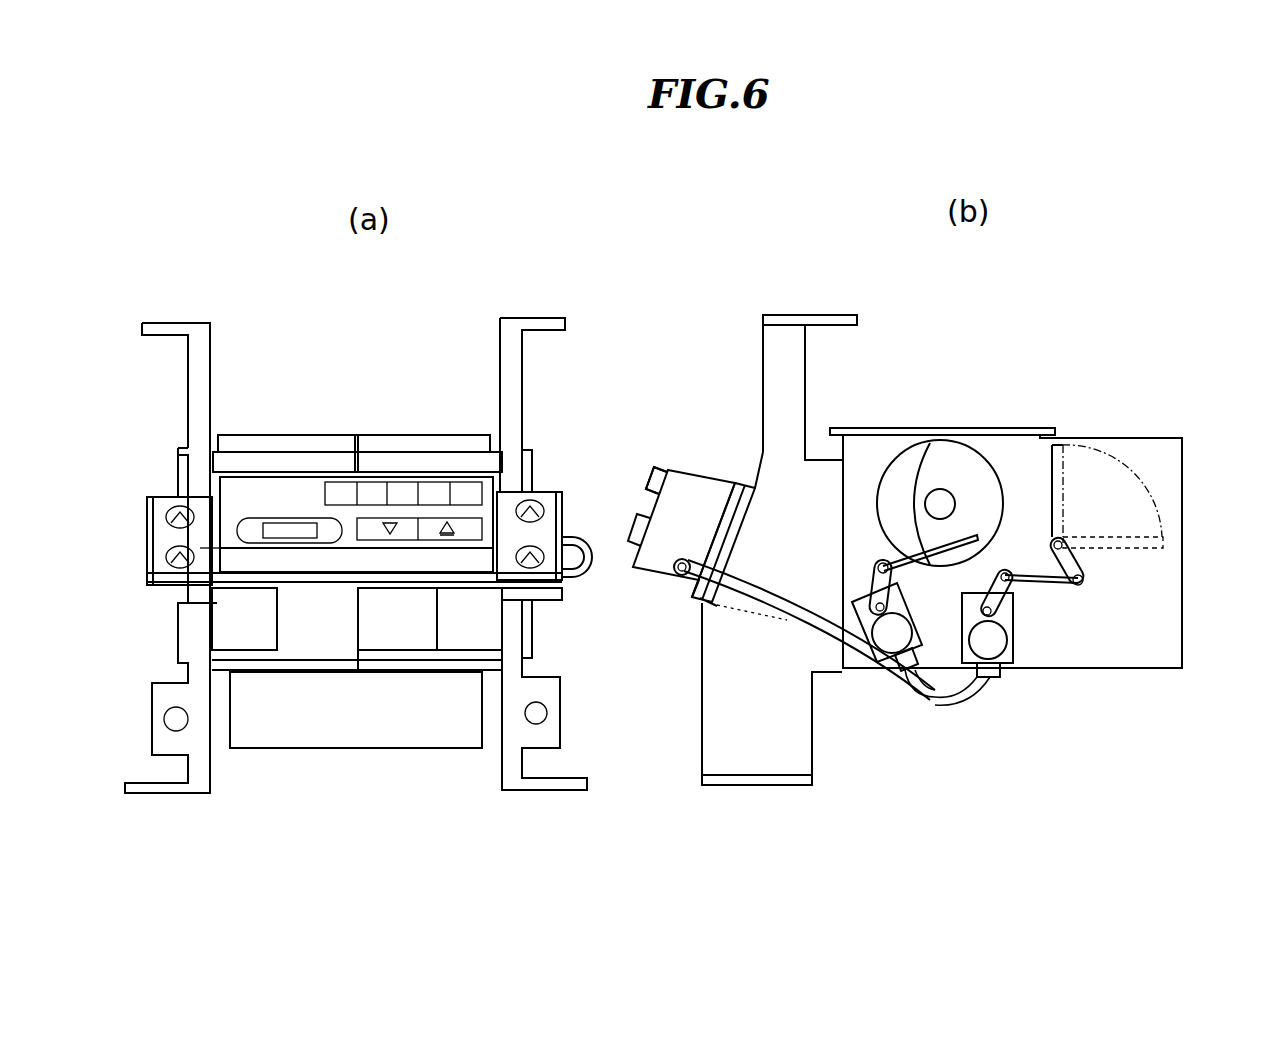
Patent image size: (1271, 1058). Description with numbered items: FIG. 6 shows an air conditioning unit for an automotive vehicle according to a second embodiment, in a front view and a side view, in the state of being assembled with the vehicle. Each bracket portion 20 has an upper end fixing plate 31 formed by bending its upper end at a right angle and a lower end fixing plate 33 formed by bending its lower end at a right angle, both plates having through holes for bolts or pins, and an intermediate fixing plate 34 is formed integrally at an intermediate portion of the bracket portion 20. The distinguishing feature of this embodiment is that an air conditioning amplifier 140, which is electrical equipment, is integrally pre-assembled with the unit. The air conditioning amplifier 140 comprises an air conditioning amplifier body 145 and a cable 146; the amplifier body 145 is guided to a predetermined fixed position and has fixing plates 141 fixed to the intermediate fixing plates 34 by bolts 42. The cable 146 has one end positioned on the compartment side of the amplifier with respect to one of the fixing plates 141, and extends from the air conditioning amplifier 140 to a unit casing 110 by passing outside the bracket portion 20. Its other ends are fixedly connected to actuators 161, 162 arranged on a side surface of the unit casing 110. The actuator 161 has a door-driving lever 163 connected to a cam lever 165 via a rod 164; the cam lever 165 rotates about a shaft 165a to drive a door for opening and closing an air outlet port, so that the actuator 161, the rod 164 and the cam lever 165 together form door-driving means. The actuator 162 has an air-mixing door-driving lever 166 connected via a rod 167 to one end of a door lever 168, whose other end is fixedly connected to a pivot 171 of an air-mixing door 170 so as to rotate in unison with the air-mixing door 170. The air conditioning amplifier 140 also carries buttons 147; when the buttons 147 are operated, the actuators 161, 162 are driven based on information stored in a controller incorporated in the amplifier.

The bracket portion 20 is at (225, 388).
The upper end fixing plate 31 is at (173, 323).
The lower end fixing plate 33 is at (155, 795).
The intermediate fixing plate 34 is at (540, 598).
The bolt 42 is at (148, 508).
The unit casing 110 is at (1056, 410).
The air conditioning amplifier 140 is at (240, 500).
The fixing plate 141 is at (153, 580).
The air conditioning amplifier body 145 is at (230, 535).
The cable 146 is at (576, 533).
The button 147 is at (402, 493).
The actuator 161 is at (925, 642).
The actuator 162 is at (1013, 600).
The door-driving lever 163 is at (868, 580).
The rod 164 is at (940, 488).
The cam lever 165 is at (993, 452).
The shaft 165a is at (977, 455).
The air-mixing door-driving lever 166 is at (1085, 598).
The second link 167 is at (1000, 595).
The door lever 168 is at (1060, 580).
The air-mixing door 170 is at (1097, 440).
The pivot 171 is at (1165, 545).